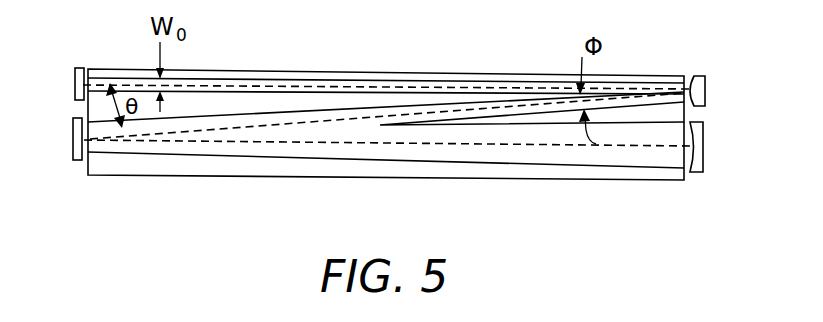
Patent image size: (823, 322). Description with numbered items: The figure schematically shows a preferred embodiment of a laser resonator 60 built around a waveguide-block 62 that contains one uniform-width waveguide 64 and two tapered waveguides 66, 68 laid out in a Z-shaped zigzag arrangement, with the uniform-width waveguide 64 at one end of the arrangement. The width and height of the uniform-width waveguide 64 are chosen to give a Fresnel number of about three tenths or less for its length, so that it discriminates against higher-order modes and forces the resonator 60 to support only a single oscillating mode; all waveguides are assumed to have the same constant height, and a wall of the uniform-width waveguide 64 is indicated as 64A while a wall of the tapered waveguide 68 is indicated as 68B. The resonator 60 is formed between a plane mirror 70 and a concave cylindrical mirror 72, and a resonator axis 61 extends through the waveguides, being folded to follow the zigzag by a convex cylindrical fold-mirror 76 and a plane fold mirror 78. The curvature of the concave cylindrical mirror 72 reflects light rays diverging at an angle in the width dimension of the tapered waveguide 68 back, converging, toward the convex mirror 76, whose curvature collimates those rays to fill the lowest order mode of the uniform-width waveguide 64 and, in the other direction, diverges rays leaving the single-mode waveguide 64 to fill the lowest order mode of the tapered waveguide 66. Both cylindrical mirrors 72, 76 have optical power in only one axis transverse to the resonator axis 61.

The laser resonator 60 is at (484, 216).
The resonator axis 61 is at (480, 88).
The waveguide-block 62 is at (294, 178).
The uniform-width waveguide 64 is at (277, 66).
The waveguide wall 64A is at (128, 80).
The tapered waveguide 66 is at (340, 100).
The tapered waveguide 68 is at (548, 176).
The tapered waveguide lower wall 68B is at (640, 168).
The plane mirror 70 is at (74, 86).
The concave cylindrical mirror 72 is at (704, 133).
The convex cylindrical fold-mirror 76 is at (706, 88).
The plane fold mirror 78 is at (72, 148).